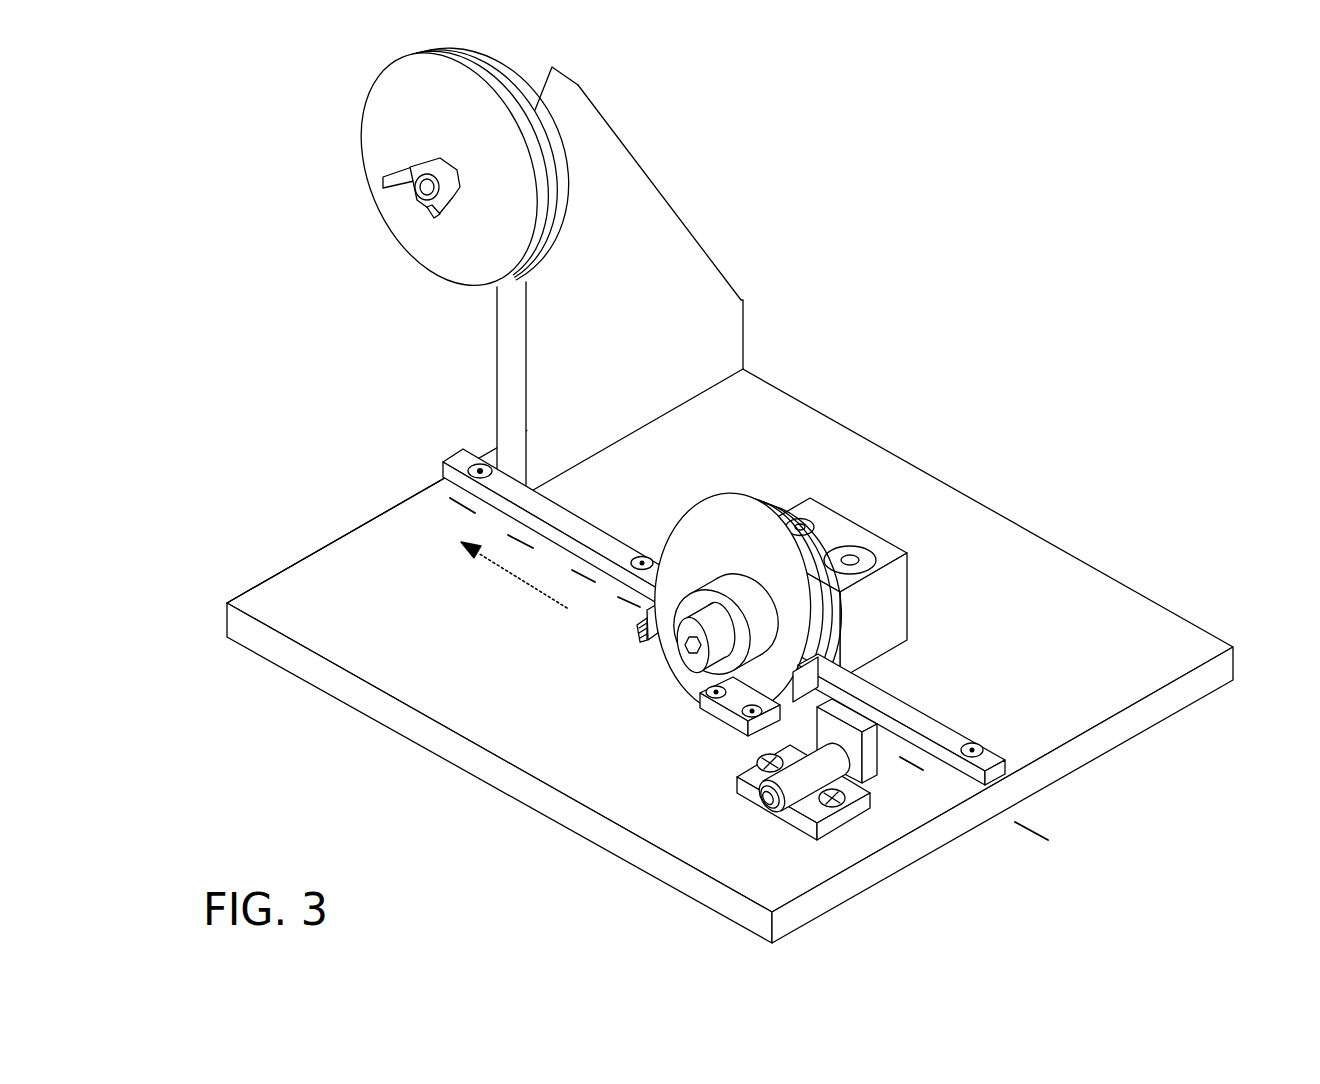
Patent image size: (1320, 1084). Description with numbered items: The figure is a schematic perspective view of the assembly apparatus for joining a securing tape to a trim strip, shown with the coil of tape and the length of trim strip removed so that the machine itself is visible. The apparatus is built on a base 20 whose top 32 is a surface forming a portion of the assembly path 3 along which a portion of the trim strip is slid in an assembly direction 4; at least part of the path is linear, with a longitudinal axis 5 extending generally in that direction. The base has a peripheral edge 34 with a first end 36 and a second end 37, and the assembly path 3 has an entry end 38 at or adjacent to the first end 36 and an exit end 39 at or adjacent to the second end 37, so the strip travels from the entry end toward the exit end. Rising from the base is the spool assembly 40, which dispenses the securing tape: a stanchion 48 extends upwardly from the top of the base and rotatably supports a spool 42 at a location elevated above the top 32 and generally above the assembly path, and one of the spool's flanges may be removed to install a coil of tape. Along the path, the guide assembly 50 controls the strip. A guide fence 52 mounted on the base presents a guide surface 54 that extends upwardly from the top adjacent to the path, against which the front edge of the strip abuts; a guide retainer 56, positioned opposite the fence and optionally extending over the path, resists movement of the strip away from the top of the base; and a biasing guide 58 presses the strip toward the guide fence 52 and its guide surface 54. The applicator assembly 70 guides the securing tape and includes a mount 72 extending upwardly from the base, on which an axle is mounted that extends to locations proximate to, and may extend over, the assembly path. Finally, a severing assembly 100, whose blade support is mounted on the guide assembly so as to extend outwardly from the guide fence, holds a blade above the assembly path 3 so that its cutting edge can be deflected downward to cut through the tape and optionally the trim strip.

The assembly path 3 is at (945, 792).
The assembly direction 4 is at (493, 570).
The longitudinal axis 5 is at (410, 478).
The base 20 is at (687, 640).
The top 32 is at (430, 512).
The peripheral edge 34 is at (1085, 560).
The first end 36 is at (1115, 735).
The second end 37 is at (262, 578).
The entry end 38 is at (987, 842).
The exit end 39 is at (410, 482).
The spool assembly 40 is at (655, 280).
The spool 42 is at (440, 243).
The stanchion 48 is at (685, 302).
The guide assembly 50 is at (958, 762).
The guide fence 52 is at (920, 727).
The guide surface 54 is at (880, 707).
The guide retainer 56 is at (705, 722).
The biasing guide 58 is at (777, 817).
The applicator assembly 70 is at (673, 673).
The mount 72 is at (860, 520).
The severing assembly 100 is at (620, 647).